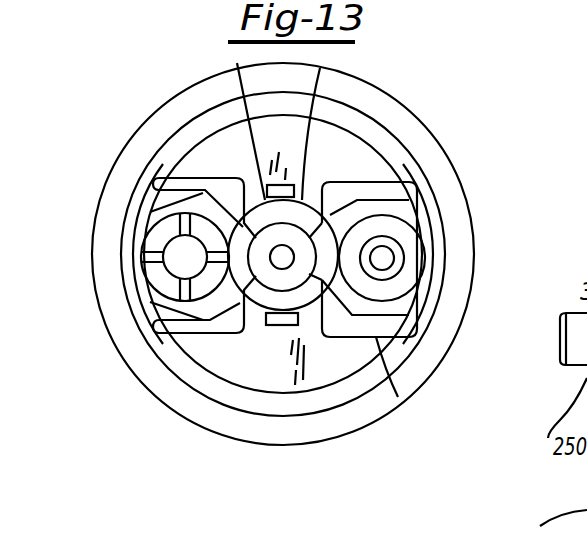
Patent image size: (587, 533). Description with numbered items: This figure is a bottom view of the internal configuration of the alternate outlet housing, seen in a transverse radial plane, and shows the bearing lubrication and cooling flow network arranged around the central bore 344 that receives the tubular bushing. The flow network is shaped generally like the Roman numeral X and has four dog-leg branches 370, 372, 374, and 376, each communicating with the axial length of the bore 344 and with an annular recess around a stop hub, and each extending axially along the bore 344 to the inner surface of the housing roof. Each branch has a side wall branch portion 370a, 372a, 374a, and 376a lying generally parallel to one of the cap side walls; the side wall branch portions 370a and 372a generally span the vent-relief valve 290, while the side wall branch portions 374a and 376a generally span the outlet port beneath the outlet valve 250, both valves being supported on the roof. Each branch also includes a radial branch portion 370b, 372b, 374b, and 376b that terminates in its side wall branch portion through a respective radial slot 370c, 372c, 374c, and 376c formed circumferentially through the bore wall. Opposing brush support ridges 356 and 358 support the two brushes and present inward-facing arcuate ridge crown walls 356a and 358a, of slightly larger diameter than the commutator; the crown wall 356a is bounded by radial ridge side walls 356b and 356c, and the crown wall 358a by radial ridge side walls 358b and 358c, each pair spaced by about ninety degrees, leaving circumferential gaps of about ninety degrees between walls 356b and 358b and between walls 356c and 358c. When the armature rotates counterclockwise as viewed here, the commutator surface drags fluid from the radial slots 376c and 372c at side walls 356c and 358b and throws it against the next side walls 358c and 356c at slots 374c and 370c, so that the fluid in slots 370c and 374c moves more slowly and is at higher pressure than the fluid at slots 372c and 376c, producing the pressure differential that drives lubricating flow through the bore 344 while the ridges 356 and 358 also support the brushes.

The outlet valve 250 is at (138, 290).
The vent-relief valve 290 is at (425, 243).
The bore 344 is at (468, 270).
The brush support ridge 356 is at (243, 120).
The arcuate ridge crown wall 356a is at (320, 68).
The radial ridge side wall 356b is at (410, 100).
The radial ridge side wall 356c is at (200, 117).
The brush support ridge 358 is at (232, 330).
The arcuate ridge crown wall 358a is at (322, 330).
The radial ridge side wall 358b is at (340, 330).
The radial ridge side wall 358c is at (203, 428).
The branch 370 is at (440, 192).
The side wall branch portion 370a is at (347, 203).
The radial branch portion 370b is at (463, 190).
The radial slot 370c is at (305, 207).
The branch 372 is at (412, 365).
The side wall branch portion 372a is at (400, 393).
The radial branch portion 372b is at (450, 330).
The radial slot 372c is at (313, 330).
The branch 374 is at (172, 340).
The side wall branch portion 374a is at (190, 378).
The radial branch portion 374b is at (157, 333).
The radial slot 374c is at (260, 330).
The branch 376 is at (153, 180).
The side wall branch portion 376a is at (160, 113).
The radial branch portion 376b is at (108, 214).
The radial slot 376c is at (258, 225).